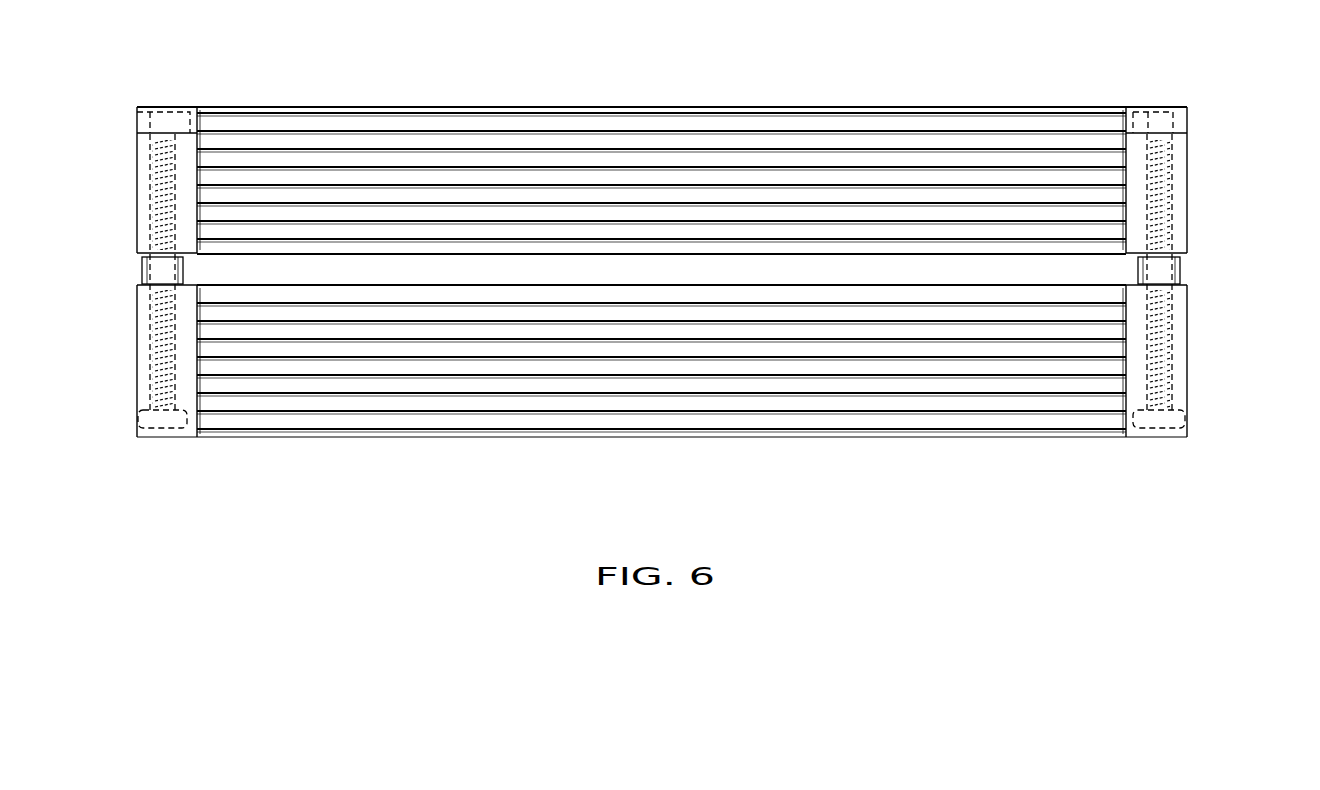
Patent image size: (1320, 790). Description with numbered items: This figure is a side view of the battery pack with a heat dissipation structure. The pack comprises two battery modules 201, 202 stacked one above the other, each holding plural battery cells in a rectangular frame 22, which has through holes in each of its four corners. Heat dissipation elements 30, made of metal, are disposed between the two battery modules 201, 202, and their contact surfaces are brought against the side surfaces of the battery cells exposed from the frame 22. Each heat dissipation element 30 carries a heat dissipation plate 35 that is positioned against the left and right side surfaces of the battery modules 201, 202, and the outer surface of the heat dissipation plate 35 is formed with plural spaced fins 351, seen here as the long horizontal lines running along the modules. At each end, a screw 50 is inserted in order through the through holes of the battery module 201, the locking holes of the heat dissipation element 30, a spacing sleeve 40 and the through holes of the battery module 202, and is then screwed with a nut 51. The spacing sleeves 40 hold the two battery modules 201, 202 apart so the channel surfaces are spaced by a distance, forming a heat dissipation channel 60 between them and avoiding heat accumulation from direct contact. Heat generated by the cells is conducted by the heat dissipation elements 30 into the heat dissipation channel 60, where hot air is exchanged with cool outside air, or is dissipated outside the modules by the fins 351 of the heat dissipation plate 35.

The battery module 202 is at (1192, 175).
The battery module 201 is at (1192, 383).
The heat dissipation channel 60 is at (319, 273).
The rectangular frame 22 is at (1141, 156).
The heat dissipation plate 35 is at (748, 140).
The fins 351 is at (717, 133).
The heat dissipation element 30 is at (516, 275).
The nut 51 is at (155, 123).
The screw 50 is at (163, 355).
The spacing sleeve 40 is at (145, 272).